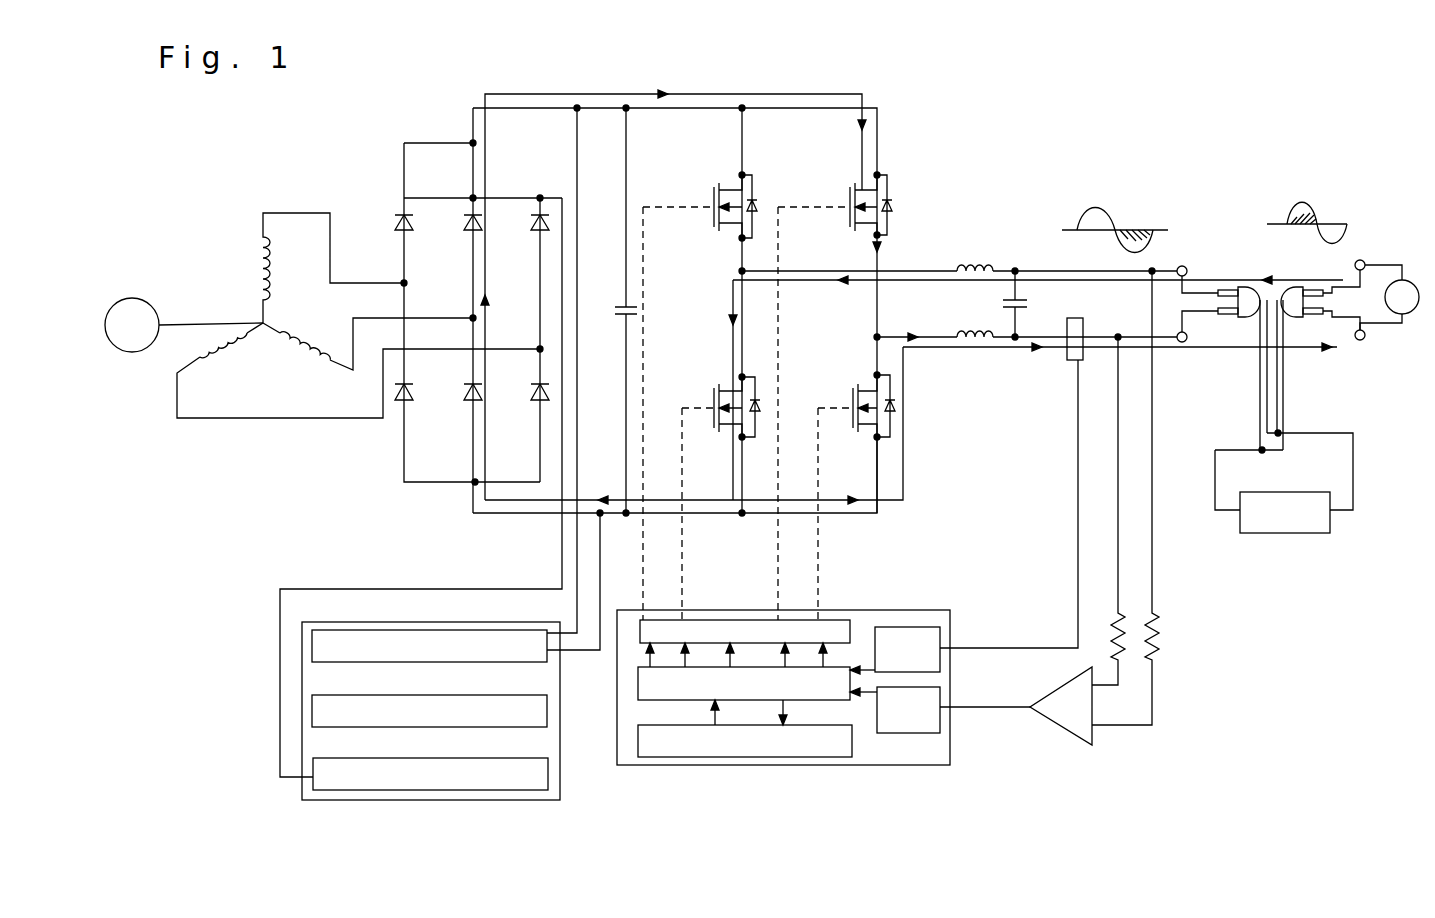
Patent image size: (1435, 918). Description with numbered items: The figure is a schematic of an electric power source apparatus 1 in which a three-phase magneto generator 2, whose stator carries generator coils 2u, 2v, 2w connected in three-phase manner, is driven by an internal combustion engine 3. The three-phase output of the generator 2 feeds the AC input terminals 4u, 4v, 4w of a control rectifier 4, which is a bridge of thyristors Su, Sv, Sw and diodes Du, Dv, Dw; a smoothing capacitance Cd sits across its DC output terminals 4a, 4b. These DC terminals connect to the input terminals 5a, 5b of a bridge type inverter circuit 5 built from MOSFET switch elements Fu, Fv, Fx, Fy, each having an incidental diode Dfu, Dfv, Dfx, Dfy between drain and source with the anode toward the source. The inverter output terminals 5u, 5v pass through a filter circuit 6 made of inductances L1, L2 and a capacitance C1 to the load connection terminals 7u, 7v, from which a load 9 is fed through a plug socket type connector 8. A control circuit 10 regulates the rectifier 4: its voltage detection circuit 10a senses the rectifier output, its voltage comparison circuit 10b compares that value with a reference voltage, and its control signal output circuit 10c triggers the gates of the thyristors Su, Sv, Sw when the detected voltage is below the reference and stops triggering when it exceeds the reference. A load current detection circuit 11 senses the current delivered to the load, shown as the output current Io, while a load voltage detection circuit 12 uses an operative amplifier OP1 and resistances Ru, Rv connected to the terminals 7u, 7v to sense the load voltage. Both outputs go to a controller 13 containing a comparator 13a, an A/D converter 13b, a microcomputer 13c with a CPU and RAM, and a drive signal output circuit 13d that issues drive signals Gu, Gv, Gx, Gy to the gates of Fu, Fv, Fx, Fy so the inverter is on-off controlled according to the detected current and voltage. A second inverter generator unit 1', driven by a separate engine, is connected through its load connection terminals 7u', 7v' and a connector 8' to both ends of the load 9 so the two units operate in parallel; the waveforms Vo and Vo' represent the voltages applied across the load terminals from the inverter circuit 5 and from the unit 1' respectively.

The electric power source apparatus 1 is at (933, 50).
The inverter generator unit 1' is at (1392, 274).
The three-phase magneto generator 2 is at (328, 272).
The generator coil 2u is at (253, 263).
The generator coil 2v is at (297, 350).
The generator coil 2w is at (190, 350).
The internal combustion engine 3 is at (128, 298).
The control rectifier 4 is at (626, 300).
The DC output terminal 4a is at (530, 108).
The DC output terminal 4b is at (527, 512).
The AC input terminal 4u is at (403, 282).
The AC input terminal 4v is at (473, 318).
The AC input terminal 4w is at (540, 349).
The bridge type inverter circuit 5 is at (910, 310).
The input terminal of the inverter circuit 5a is at (710, 107).
The input terminal of the inverter circuit 5b is at (700, 513).
The output terminal of the inverter circuit 5u is at (910, 272).
The output terminal of the inverter circuit 5v is at (942, 350).
The filter circuit 6 is at (1031, 246).
The load connection terminal 7u is at (1197, 237).
The load connection terminal 7v is at (1198, 367).
The load connection terminal 7u' is at (1376, 232).
The load connection terminal 7v' is at (1388, 373).
The plug socket type connector 8 is at (1224, 310).
The connector 8' is at (1318, 360).
The load 9 is at (1302, 533).
The control circuit 10 is at (377, 690).
The voltage detection circuit 10a is at (388, 630).
The voltage comparison circuit 10b is at (533, 727).
The control signal output circuit 10c is at (420, 790).
The load current detection circuit 11 is at (1067, 360).
The load voltage detection circuit 12 is at (1063, 726).
The controller 13 is at (820, 663).
The comparator 13a is at (940, 633).
The A/D converter 13b is at (940, 722).
The microcomputer 13c is at (853, 740).
The drive signal output circuit 13d is at (835, 618).
The thyristor Su is at (397, 220).
The thyristor Sv is at (470, 230).
The thyristor Sw is at (537, 232).
The diode Du is at (402, 405).
The diode Dv is at (473, 405).
The diode Dw is at (538, 403).
The smoothing capacitance Cd is at (620, 317).
The drive signal Gu is at (694, 396).
The drive signal Gv is at (829, 396).
The drive signal Gx is at (708, 497).
The drive signal Gy is at (843, 496).
The switch element MOSFET Fu is at (715, 230).
The switch element MOSFET Fv is at (850, 227).
The switch element MOSFET Fx is at (718, 430).
The switch element MOSFET Fy is at (853, 430).
The incidental diode Dfu is at (753, 200).
The incidental diode Dfv is at (893, 207).
The incidental diode Dfx is at (757, 412).
The incidental diode Dfy is at (900, 403).
The inductance L1 is at (973, 263).
The inductance L2 is at (980, 330).
The capacitance C1 is at (1030, 303).
The resistance Ru is at (1165, 630).
The resistance Rv is at (1132, 645).
The operative amplifier OP1 is at (1060, 730).
The voltage applied across the load connection terminals from the inverter circuit Vo is at (1115, 202).
The voltage applied across the load connection terminals from the inverter generator Vo' is at (1307, 189).
The output current Io is at (1293, 275).